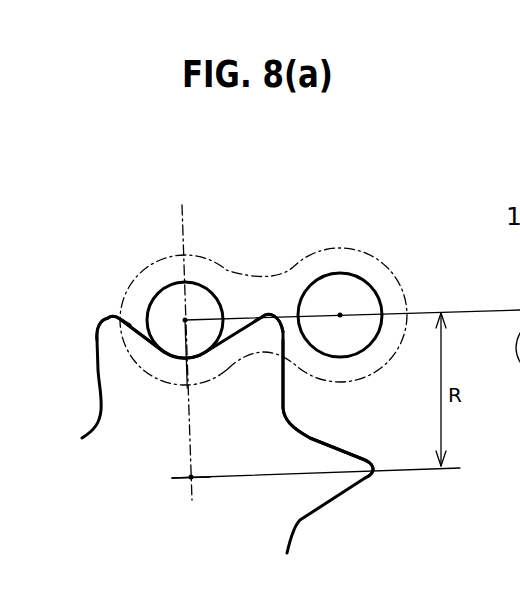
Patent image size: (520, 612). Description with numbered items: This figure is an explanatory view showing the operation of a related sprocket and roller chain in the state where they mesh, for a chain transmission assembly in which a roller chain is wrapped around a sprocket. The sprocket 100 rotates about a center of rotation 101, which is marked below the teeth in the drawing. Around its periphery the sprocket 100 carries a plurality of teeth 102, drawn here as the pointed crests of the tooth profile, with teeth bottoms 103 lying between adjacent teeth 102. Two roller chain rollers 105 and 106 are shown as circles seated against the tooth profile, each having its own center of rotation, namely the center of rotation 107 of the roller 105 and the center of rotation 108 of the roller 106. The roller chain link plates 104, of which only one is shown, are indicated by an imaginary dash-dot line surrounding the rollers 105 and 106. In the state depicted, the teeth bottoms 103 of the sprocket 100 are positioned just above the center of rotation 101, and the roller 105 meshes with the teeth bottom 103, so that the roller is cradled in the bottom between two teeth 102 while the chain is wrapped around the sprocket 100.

The sprocket 100 is at (297, 525).
The center of rotation 101 is at (191, 478).
The teeth 102 is at (103, 317).
The teeth bottoms 103 is at (152, 328).
The roller chain link plates 104 is at (403, 283).
The roller chain roller 105 is at (202, 283).
The roller chain roller 106 is at (332, 274).
The center of rotation 107 is at (177, 357).
The center of rotation 108 is at (341, 315).